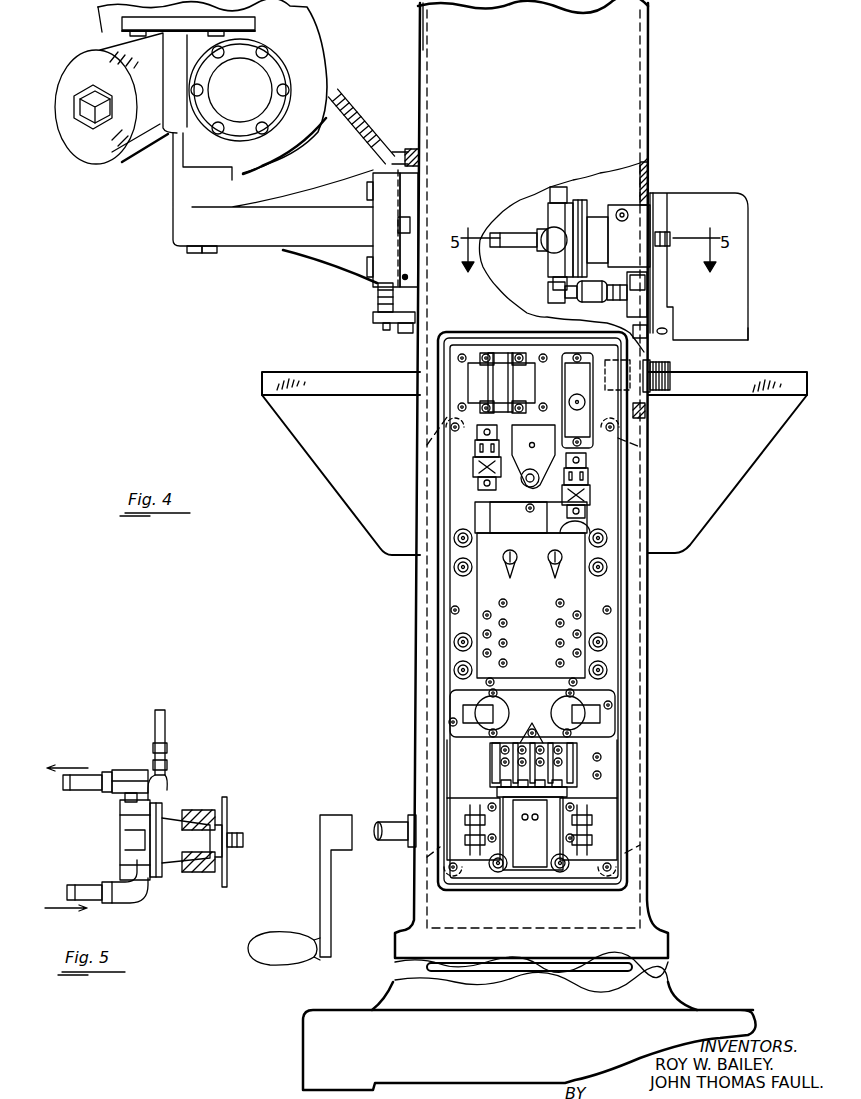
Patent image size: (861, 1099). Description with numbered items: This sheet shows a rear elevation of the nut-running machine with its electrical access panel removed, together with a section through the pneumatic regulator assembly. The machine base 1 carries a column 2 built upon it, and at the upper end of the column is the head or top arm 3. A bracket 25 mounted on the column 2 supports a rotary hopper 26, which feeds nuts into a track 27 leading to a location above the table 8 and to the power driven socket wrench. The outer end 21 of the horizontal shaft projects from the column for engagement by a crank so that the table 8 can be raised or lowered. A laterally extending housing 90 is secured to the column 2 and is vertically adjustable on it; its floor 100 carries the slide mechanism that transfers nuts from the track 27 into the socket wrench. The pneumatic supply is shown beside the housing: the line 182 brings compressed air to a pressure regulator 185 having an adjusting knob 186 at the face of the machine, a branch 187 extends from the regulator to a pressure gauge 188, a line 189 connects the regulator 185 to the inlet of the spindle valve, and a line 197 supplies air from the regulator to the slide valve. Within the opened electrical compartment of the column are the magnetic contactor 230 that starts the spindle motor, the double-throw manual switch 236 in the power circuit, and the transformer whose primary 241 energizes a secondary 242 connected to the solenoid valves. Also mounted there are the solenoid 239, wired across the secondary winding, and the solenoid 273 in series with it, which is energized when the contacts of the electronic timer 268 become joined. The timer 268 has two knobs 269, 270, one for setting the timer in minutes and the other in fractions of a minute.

In FIG. 4, the machine base 1 is at (724, 992).
In FIG. 4, the column 2 is at (648, 612).
In FIG. 4, the head or top arm 3 is at (638, 123).
In FIG. 4, the table 8 is at (758, 368).
In FIG. 4, the outer end of the shaft 21 is at (407, 822).
In FIG. 4, the bracket 25 is at (298, 237).
In FIG. 4, the rotary hopper 26 is at (318, 78).
In FIG. 4, the track 27 is at (355, 148).
In FIG. 4, the laterally extending housing 90 is at (707, 266).
In FIG. 4, the floor of the housing 100 is at (748, 333).
In FIG. 4, the pressure fluid line 182 is at (515, 232).
In FIG. 4, the pressure regulator 185 is at (553, 207).
In FIG. 5, the pressure regulator 185 is at (158, 872).
In FIG. 4, the adjusting knob 186 is at (668, 233).
In FIG. 5, the adjusting knob 186 is at (240, 837).
In FIG. 4, the branch 187 is at (590, 300).
In FIG. 4, the pressure gauge 188 is at (641, 296).
In FIG. 5, the line 189 is at (88, 770).
In FIG. 5, the line 197 is at (165, 733).
In FIG. 4, the magnetic contactor 230 is at (528, 857).
In FIG. 4, the double-throw manual switch 236 is at (672, 362).
In FIG. 4, the solenoid 239 is at (467, 715).
In FIG. 4, the primary 241 is at (502, 367).
In FIG. 4, the secondary 242 is at (503, 375).
In FIG. 4, the electronic timer 268 is at (485, 594).
In FIG. 4, the timer knob 269 is at (511, 551).
In FIG. 4, the timer knob 270 is at (556, 551).
In FIG. 4, the solenoid 273 is at (597, 715).